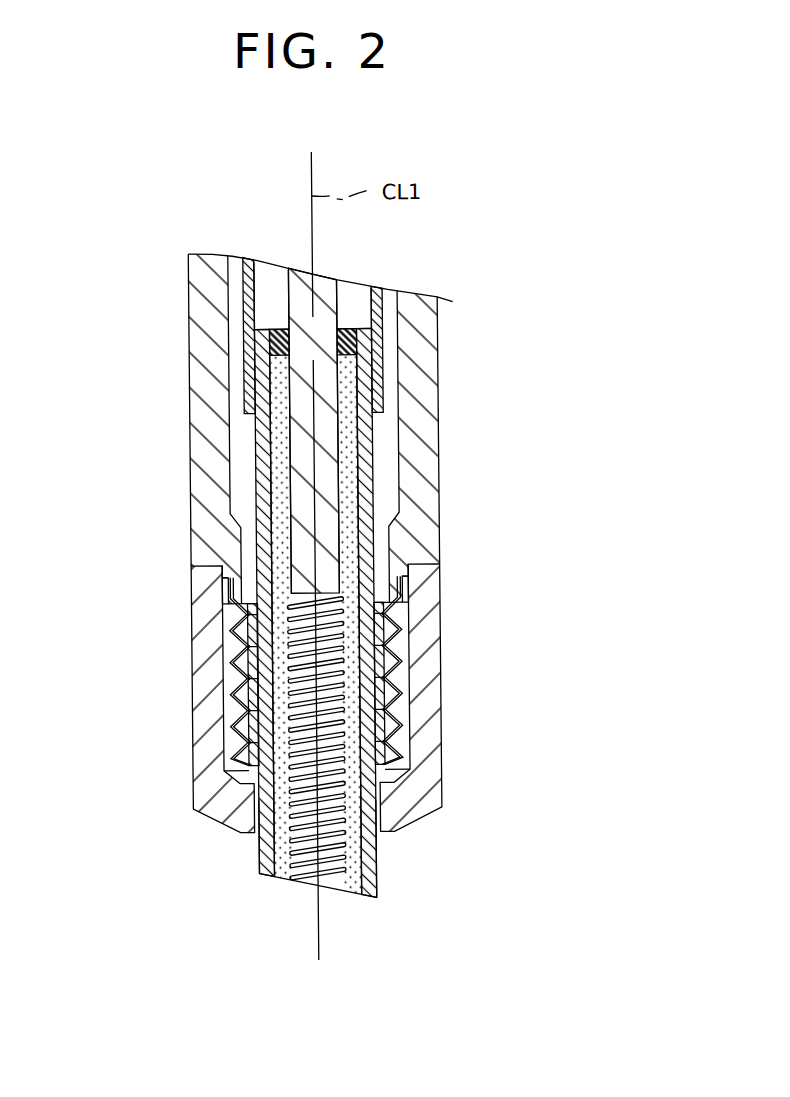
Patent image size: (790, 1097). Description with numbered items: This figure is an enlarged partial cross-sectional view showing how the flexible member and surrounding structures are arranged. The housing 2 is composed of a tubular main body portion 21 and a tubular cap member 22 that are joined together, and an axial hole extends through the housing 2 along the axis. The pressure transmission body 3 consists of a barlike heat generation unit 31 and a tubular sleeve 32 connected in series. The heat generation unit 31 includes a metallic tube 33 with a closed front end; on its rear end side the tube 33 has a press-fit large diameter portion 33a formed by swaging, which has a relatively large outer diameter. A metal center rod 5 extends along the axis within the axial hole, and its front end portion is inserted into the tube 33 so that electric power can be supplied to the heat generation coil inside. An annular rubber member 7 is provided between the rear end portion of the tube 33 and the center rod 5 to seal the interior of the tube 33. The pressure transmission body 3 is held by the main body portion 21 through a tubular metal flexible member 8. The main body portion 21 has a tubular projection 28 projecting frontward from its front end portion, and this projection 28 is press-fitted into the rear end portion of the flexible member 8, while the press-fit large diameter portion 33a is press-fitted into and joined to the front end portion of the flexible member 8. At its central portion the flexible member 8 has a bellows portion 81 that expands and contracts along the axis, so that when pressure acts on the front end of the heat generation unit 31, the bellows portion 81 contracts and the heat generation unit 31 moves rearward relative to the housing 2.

The housing 2 is at (552, 508).
The main body portion 21 is at (440, 506).
The cap member 22 is at (440, 600).
The pressure transmission body 3 is at (90, 428).
The heat generation unit 31 is at (241, 547).
The sleeve 32 is at (246, 394).
The tube 33 is at (377, 864).
The press-fit large diameter portion 33a is at (317, 885).
The center rod 5 is at (288, 297).
The rubber member 7 is at (343, 328).
The flexible member 8 is at (400, 672).
The bellows portion 81 is at (232, 697).
The projection 28 is at (230, 588).